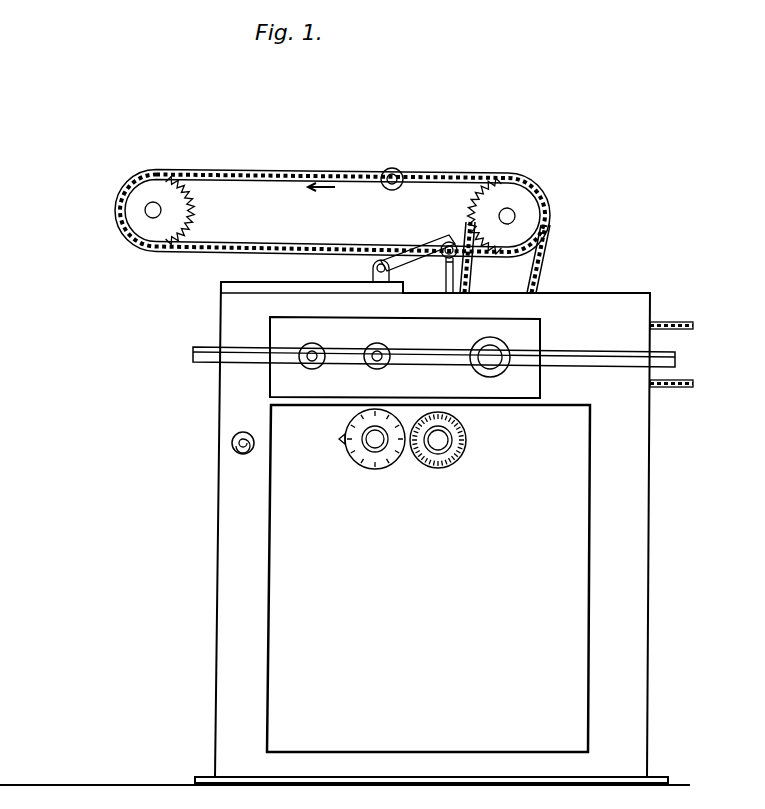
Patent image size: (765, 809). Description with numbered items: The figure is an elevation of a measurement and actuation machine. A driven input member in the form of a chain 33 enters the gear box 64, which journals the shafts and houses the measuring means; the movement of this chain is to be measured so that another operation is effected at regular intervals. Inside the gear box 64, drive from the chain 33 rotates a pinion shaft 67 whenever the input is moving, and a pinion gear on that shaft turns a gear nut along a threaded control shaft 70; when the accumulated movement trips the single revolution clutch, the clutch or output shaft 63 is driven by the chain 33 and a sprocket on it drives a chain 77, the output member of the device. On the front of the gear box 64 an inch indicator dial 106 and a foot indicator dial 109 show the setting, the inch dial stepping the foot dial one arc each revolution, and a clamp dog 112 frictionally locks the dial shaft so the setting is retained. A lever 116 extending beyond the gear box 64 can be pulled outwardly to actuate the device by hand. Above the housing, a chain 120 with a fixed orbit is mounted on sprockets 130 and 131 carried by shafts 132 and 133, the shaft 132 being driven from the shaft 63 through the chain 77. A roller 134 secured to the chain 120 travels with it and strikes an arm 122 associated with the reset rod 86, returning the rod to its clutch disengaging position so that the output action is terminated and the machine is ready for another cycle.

The chain 33 is at (681, 303).
The clutch or output shaft 63 is at (497, 352).
The gear box 64 is at (217, 560).
The pinion shaft 67 is at (318, 353).
The control shaft 70 is at (384, 352).
The chain 77 is at (537, 274).
The reset rod 86 is at (446, 274).
The inch indicator dial 106 is at (372, 469).
The foot indicator dial 109 is at (466, 459).
The clamp dog 112 is at (343, 445).
The lever 116 is at (241, 446).
The chain 120 is at (248, 170).
The arm 122 is at (447, 240).
The sprocket 130 is at (503, 188).
The sprocket 131 is at (190, 206).
The shaft 132 is at (517, 213).
The shaft 133 is at (149, 218).
The roller 134 is at (401, 172).